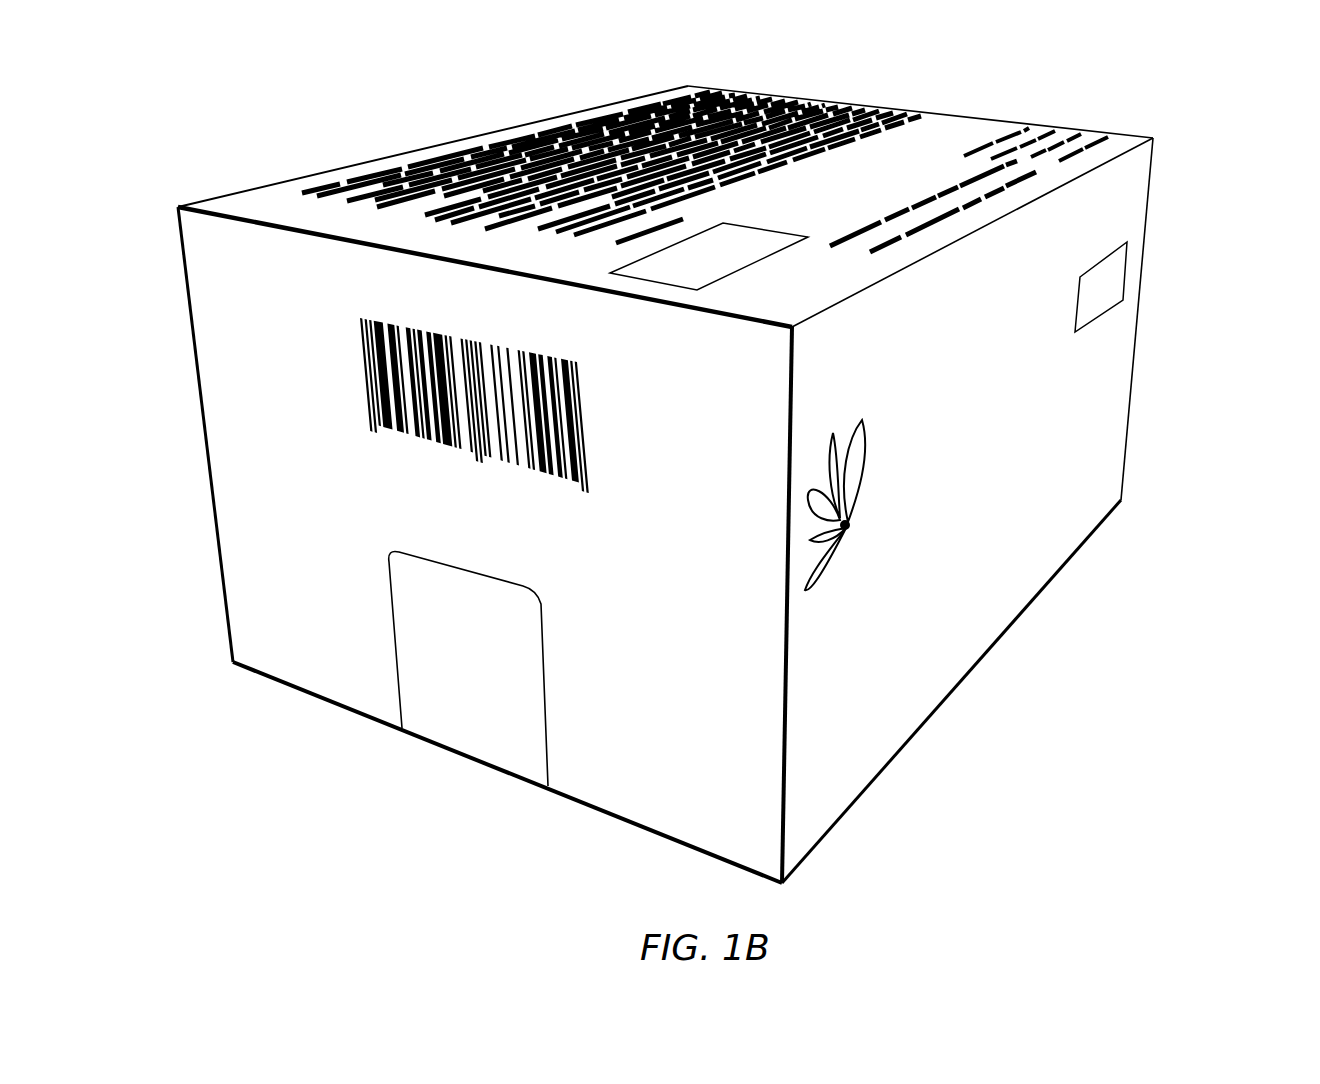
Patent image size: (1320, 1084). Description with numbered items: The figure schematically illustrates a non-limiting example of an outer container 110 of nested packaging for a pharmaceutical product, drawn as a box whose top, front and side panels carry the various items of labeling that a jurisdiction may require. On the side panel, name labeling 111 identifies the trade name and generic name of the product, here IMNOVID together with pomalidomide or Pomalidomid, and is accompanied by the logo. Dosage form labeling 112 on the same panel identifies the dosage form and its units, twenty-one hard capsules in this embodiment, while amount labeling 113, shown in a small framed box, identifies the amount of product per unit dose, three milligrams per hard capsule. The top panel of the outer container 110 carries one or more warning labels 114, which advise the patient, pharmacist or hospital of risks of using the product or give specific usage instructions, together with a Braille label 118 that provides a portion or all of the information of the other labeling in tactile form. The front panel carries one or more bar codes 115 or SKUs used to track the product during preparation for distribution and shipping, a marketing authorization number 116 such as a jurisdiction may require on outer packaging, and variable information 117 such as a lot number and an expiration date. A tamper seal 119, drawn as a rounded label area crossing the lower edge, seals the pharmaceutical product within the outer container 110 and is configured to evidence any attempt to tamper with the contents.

The outer container 110 is at (1200, 106).
The name labeling 111 is at (850, 468).
The dosage form labeling 112 is at (808, 377).
The amount labeling 113 is at (1140, 270).
The warning labels 114 is at (792, 102).
The bar codes 115 is at (358, 375).
The marketing authorization number 116 is at (193, 243).
The variable information 117 is at (505, 665).
The Braille label 118 is at (1047, 140).
The tamper seal 119 is at (548, 729).